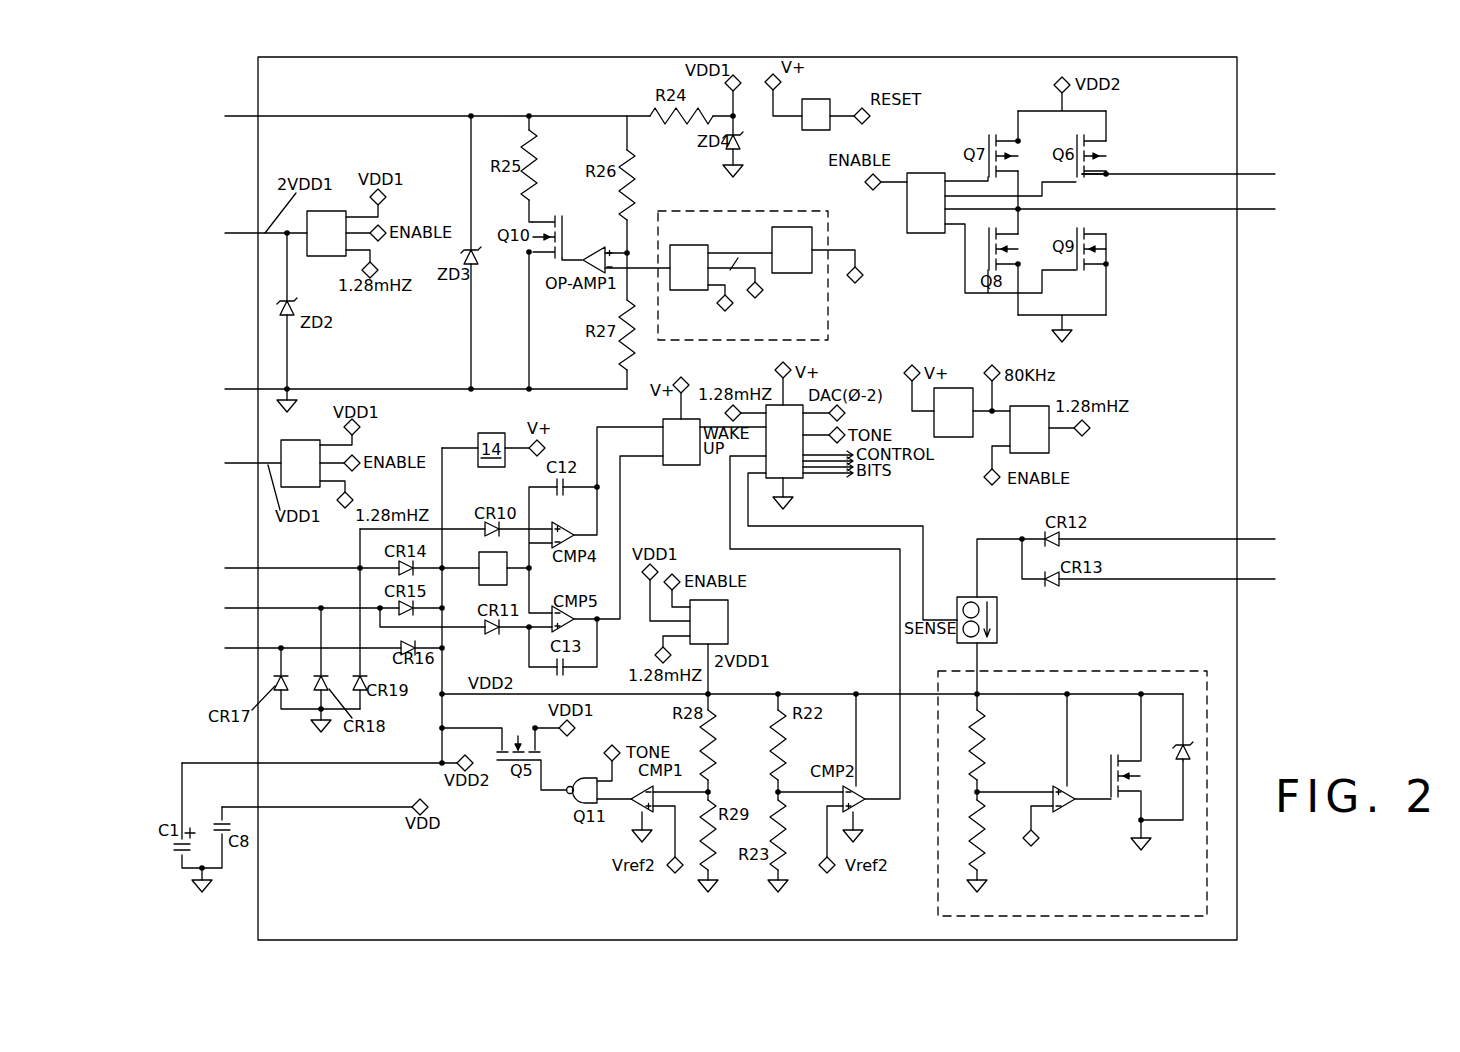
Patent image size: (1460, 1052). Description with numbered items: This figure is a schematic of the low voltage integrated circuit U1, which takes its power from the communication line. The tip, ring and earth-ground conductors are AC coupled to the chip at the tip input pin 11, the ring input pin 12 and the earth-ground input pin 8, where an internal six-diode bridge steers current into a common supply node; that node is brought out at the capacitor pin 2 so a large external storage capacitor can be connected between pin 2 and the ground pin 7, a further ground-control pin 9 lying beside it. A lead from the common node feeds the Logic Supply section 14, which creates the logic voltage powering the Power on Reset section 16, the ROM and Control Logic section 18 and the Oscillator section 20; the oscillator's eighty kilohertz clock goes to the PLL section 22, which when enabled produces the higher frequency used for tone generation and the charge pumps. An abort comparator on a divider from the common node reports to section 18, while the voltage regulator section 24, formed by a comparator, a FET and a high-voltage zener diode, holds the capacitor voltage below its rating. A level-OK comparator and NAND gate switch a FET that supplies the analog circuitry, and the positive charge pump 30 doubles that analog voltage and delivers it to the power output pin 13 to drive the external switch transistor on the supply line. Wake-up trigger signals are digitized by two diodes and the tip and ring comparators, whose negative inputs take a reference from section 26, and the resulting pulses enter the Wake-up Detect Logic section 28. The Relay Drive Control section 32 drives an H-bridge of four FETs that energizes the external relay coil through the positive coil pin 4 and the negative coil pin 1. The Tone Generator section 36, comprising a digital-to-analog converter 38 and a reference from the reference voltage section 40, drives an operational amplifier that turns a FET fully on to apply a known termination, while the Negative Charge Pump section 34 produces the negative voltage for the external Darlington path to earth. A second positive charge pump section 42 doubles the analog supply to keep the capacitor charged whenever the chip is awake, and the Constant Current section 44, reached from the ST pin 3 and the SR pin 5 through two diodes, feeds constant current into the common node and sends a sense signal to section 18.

The integrated circuit U1 is at (249, 80).
The C− pin 1 is at (1146, 208).
The CAP1 pin 2 is at (319, 775).
The ST pin 3 is at (1148, 537).
The C+ pin 4 is at (1180, 172).
The SR pin 5 is at (1148, 568).
The GND pin 7 is at (416, 388).
The ACGND pin 8 is at (299, 647).
The GNDON pin 9 is at (238, 461).
The ACT pin 11 is at (304, 567).
The ACR pin 12 is at (304, 607).
The PWR pin 13 is at (256, 232).
The Logic Supply section 14 is at (427, 116).
The Power on Reset section 16 is at (826, 123).
The ROM and Control Logic section 18 is at (794, 444).
The Oscillator section 20 is at (963, 421).
The PLL section 22 is at (1039, 438).
The voltage regulator section 24 is at (1157, 668).
The reference voltage section 26 is at (503, 577).
The Wake-up Detect Logic section 28 is at (691, 450).
The positive charge pump 30 is at (336, 242).
The Relay Drive Control section 32 is at (936, 211).
The Negative Charge Pump section 34 is at (310, 472).
The Tone Generator section 36 is at (830, 312).
The digital to analog converter 38 is at (699, 276).
The VREF section 40 is at (802, 258).
The Positive Charge Pump section 42 is at (719, 631).
The Constant Current section 44 is at (999, 620).